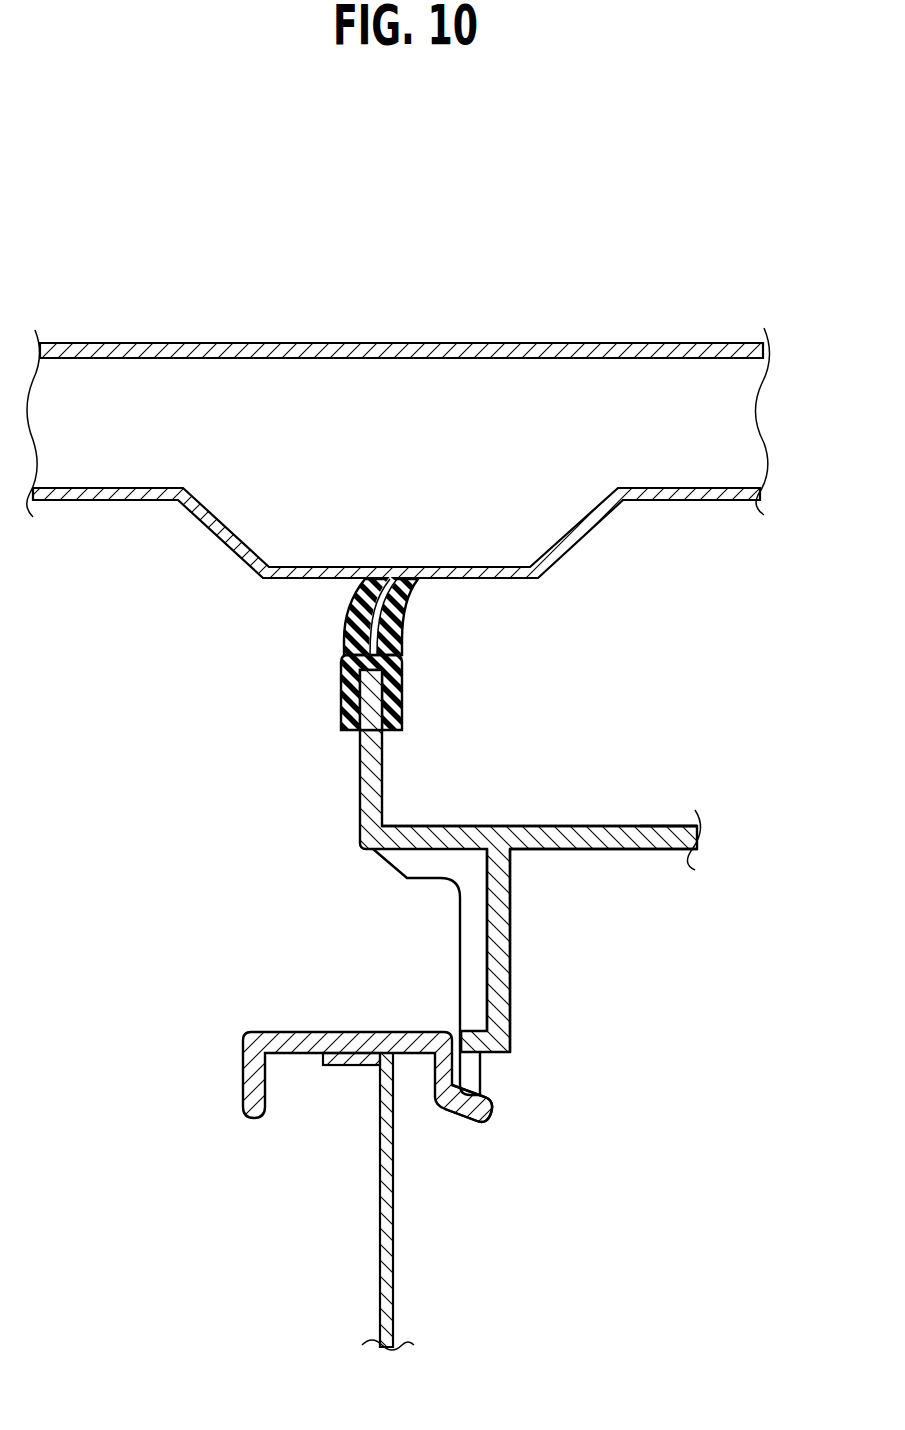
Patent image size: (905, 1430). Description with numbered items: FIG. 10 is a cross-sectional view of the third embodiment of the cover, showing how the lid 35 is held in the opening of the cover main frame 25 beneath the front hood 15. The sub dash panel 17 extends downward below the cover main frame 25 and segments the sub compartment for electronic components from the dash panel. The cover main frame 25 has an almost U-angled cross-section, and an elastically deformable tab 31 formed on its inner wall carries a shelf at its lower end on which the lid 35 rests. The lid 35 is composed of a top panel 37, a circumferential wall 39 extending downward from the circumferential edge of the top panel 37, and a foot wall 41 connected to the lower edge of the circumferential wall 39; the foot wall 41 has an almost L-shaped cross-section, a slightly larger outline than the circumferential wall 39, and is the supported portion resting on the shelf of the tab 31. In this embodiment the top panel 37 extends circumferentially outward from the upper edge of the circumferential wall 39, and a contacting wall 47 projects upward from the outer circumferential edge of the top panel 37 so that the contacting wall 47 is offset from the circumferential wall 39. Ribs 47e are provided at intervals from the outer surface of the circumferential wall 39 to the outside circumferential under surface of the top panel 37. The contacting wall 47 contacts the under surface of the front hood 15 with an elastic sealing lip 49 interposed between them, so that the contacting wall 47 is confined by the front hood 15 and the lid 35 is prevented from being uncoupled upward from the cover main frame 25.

The front hood 15 is at (412, 343).
The sub dash panel 17 is at (380, 1203).
The cover main frame 25 is at (362, 1071).
The tab 31 is at (455, 1128).
The lid 35 is at (555, 826).
The top panel 37 is at (648, 826).
The circumferential wall 39 is at (500, 947).
The foot wall 41 is at (472, 1058).
The contacting wall 47 is at (485, 917).
The rib 47e is at (475, 943).
The sealing lip 49 is at (352, 636).